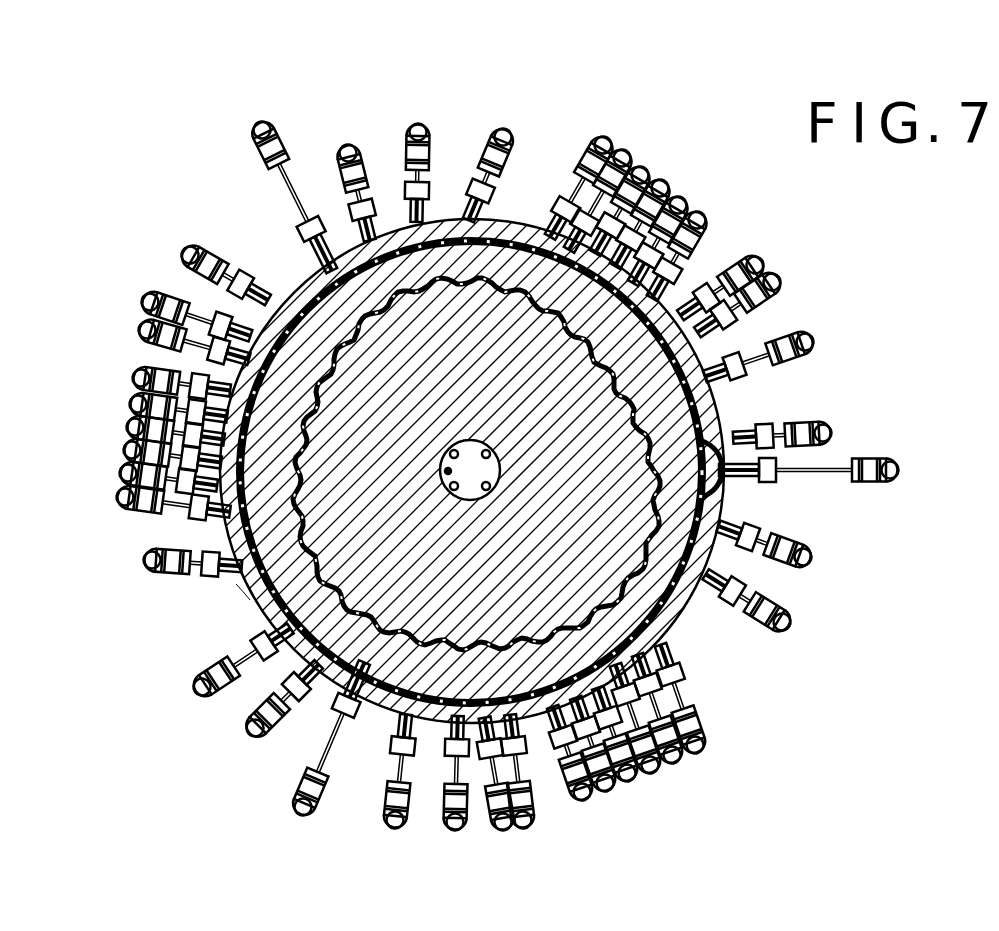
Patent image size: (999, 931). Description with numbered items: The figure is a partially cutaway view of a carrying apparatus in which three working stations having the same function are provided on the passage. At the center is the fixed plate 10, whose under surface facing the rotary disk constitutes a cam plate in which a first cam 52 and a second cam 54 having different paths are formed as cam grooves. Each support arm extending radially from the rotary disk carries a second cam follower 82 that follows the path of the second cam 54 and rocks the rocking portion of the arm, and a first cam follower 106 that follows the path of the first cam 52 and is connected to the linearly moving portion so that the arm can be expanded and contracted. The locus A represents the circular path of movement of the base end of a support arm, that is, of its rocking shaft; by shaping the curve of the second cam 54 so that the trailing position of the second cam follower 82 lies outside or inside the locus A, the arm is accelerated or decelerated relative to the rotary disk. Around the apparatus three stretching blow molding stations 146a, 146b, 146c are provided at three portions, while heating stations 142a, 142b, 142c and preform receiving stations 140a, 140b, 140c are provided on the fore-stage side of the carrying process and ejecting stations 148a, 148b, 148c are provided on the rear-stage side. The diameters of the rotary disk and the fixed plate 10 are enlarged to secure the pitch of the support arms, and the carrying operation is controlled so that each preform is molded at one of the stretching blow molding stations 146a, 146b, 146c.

The fixed plate 10 is at (724, 412).
The first cam 52 is at (675, 302).
The second cam 54 is at (717, 357).
The second cam follower 82 is at (693, 567).
The first cam follower 106 is at (683, 590).
The locus of movement of the base end of the support arm A is at (252, 592).
The preform receiving station 140a is at (460, 128).
The preform receiving station 140b is at (795, 620).
The preform receiving station 140c is at (200, 676).
The heating station 142a is at (598, 112).
The heating station 142b is at (718, 753).
The heating station 142c is at (142, 363).
The stretching blow molding station 146a is at (876, 462).
The stretching blow molding station 146b is at (295, 802).
The stretching blow molding station 146c is at (253, 133).
The ejecting station 148a is at (812, 550).
The ejecting station 148b is at (243, 733).
The ejecting station 148c is at (347, 144).